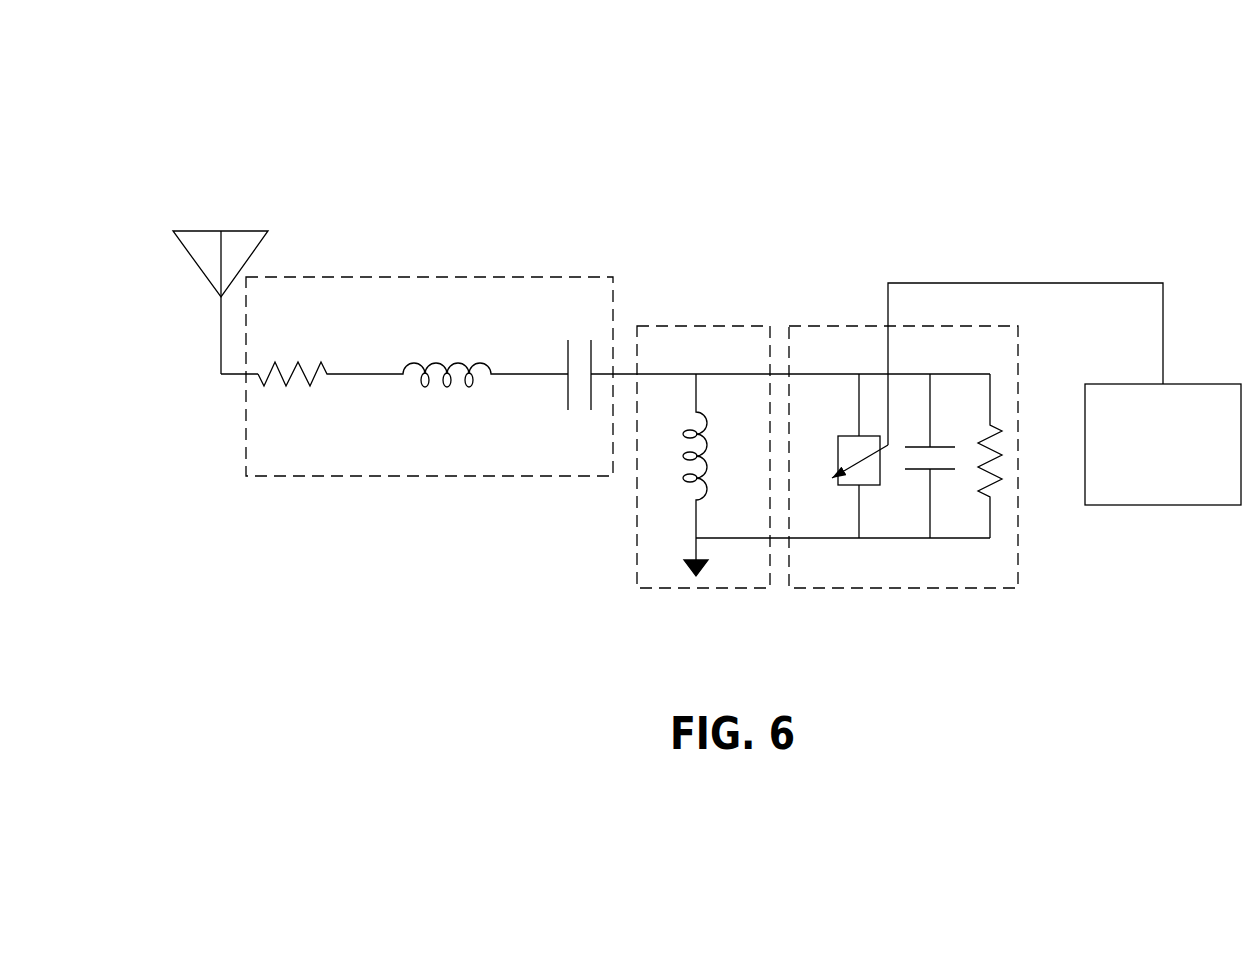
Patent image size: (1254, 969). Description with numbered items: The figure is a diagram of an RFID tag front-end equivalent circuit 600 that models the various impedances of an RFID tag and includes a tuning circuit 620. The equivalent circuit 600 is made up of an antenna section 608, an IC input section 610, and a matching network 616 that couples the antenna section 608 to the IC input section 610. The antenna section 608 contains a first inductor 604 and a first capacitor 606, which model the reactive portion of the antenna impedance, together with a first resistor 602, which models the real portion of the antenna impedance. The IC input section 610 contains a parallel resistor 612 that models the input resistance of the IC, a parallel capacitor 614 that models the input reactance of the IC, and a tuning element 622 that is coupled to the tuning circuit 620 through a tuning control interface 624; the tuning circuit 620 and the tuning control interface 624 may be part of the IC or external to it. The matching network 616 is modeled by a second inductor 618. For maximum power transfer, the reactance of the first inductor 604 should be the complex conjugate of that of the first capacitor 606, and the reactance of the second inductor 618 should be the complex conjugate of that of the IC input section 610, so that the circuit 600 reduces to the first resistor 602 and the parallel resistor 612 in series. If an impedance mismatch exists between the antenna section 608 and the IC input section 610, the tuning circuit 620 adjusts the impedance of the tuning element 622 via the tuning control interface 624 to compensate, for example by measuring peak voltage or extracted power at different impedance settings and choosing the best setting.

The RFID tag front-end equivalent circuit 600 is at (1094, 22).
The resistor R1 602 is at (291, 354).
The inductor L1 604 is at (443, 393).
The capacitor C1 606 is at (575, 338).
The antenna section 608 is at (486, 270).
The IC input section 610 is at (823, 322).
The resistor Rp 612 is at (1010, 462).
The capacitor Cp 614 is at (950, 423).
The matching network 616 is at (715, 320).
The inductor L2 618 is at (676, 459).
The tuning circuit 620 is at (1163, 508).
The tuning element 622 is at (837, 435).
The tuning control interface 624 is at (1015, 280).